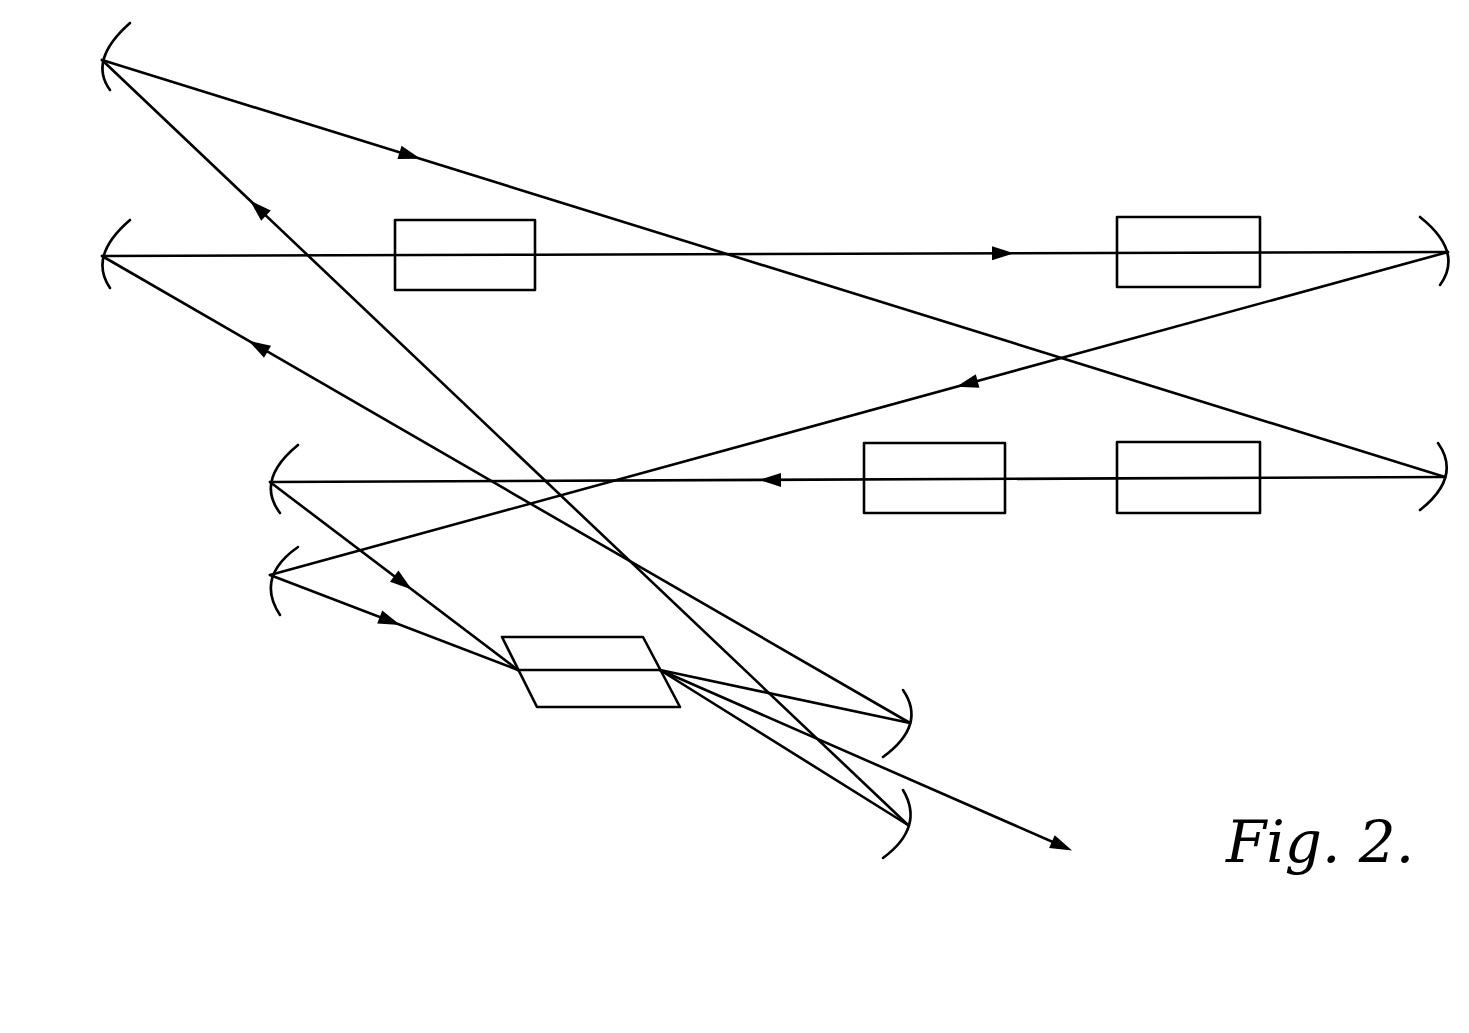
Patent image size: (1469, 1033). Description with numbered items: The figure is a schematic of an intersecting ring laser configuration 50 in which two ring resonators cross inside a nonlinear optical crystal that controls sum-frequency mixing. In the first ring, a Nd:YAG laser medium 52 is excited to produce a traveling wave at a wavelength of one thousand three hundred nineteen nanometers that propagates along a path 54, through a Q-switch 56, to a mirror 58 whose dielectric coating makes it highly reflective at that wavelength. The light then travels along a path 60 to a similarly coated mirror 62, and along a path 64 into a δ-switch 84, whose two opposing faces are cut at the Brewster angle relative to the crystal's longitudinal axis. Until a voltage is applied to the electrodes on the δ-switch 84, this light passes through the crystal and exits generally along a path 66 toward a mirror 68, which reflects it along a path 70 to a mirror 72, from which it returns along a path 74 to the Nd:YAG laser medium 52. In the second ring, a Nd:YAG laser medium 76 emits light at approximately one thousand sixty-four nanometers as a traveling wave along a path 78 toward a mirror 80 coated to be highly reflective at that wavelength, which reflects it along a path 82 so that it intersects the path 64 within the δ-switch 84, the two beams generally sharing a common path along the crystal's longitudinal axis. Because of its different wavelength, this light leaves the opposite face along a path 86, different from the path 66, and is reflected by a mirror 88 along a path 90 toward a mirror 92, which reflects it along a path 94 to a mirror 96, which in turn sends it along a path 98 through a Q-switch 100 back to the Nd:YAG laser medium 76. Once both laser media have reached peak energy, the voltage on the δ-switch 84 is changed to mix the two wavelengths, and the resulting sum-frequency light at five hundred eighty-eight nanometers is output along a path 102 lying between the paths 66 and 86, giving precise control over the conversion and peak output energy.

The intersecting ring laser configuration 50 is at (278, 720).
The Nd:YAG laser medium 52 is at (535, 278).
The path 54 is at (850, 252).
The Q-switch 56 is at (1190, 217).
The mirror 58 is at (1442, 228).
The path 60 is at (1185, 324).
The mirror 62 is at (270, 583).
The path 64 is at (450, 646).
The path 66 is at (800, 698).
The mirror 68 is at (915, 702).
The path 70 is at (290, 369).
The mirror 72 is at (105, 236).
The path 74 is at (262, 257).
The Nd:YAG laser medium 76 is at (933, 514).
The path 78 is at (570, 479).
The mirror 80 is at (270, 492).
The path 82 is at (443, 612).
The δ-switch 84 is at (540, 637).
The path 86 is at (795, 758).
The mirror 88 is at (905, 846).
The path 90 is at (455, 397).
The mirror 92 is at (100, 78).
The path 94 is at (305, 121).
The mirror 96 is at (1440, 500).
The path 98 is at (1332, 478).
The Q-switch 100 is at (1190, 514).
The path 102 is at (990, 814).